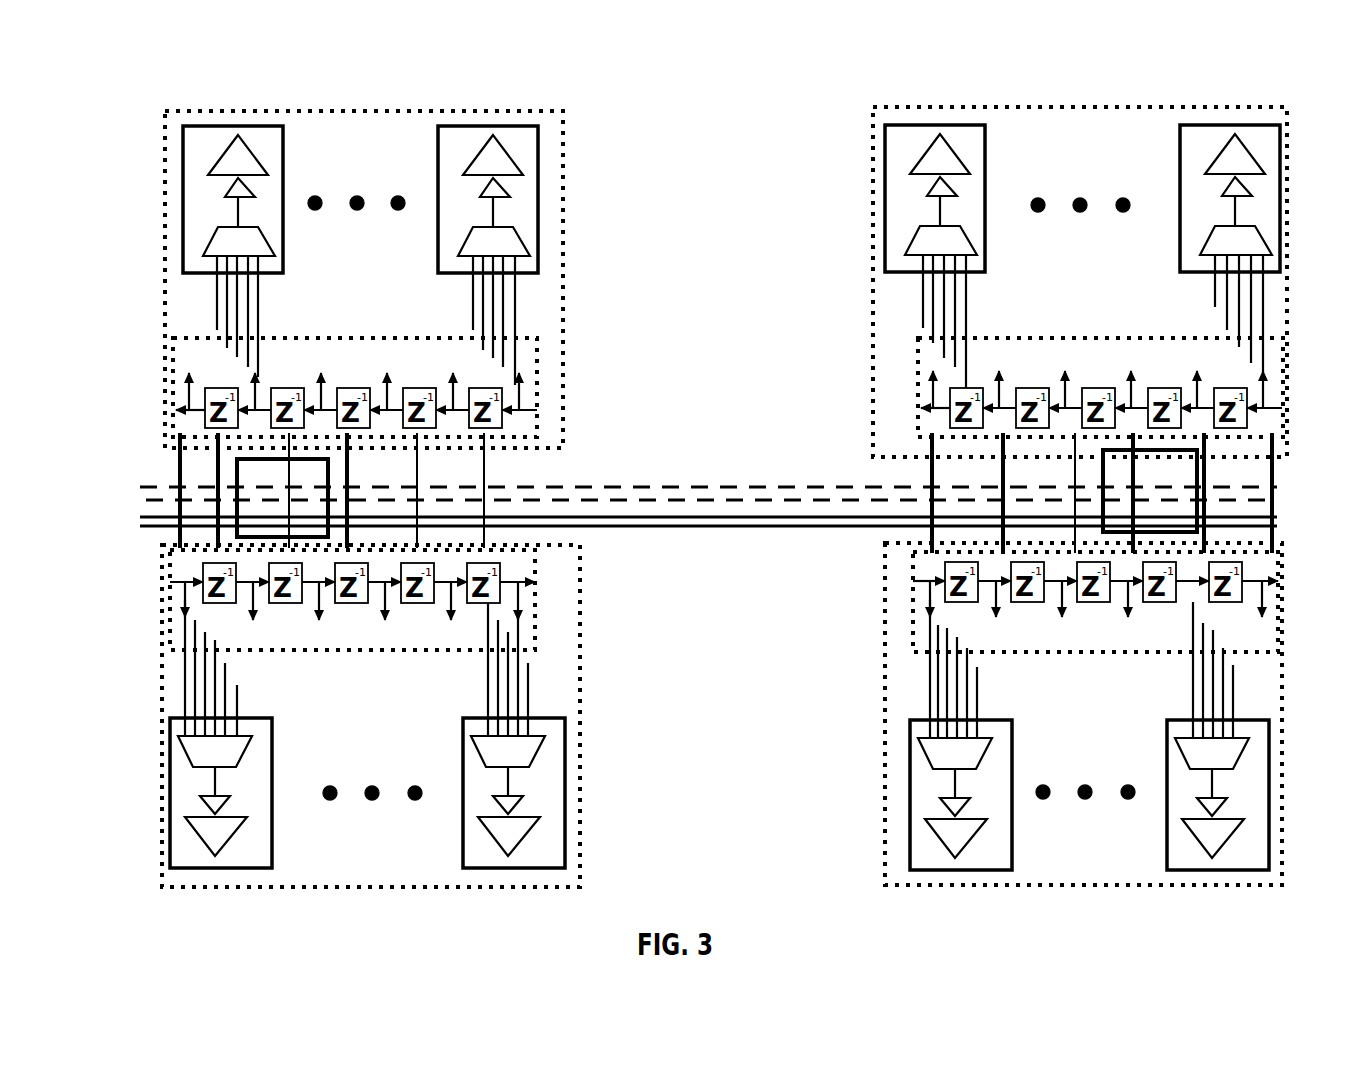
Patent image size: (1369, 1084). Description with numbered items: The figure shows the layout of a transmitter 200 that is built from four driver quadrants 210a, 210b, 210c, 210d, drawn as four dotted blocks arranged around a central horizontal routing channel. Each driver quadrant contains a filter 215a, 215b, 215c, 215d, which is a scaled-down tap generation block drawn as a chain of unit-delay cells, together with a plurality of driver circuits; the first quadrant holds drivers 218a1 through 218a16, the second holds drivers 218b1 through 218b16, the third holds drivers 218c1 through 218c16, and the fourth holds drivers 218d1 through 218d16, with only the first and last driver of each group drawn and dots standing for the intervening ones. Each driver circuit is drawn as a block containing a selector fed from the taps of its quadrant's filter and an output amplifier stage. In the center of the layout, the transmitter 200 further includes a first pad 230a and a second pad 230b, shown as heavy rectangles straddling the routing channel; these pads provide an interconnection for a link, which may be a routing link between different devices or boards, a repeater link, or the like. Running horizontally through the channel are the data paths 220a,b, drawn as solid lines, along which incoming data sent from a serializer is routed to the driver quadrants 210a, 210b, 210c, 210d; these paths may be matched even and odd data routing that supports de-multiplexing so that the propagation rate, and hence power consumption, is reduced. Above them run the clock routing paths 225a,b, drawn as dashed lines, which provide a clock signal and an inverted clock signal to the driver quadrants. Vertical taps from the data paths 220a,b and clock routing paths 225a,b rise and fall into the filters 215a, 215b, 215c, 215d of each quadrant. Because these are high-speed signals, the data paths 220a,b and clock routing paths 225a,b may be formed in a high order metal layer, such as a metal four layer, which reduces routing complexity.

The transmitter 200 is at (217, 76).
The driver quadrant 210a is at (440, 716).
The driver quadrant 210b is at (420, 251).
The driver quadrant 210c is at (1062, 256).
The driver quadrant 210d is at (1072, 714).
The filter 215a is at (421, 600).
The filter 215b is at (412, 387).
The filter 215c is at (1141, 387).
The filter 215d is at (1136, 602).
The driver circuit 218a1 is at (278, 734).
The driver circuit 218a16 is at (590, 735).
The driver circuit 218b1 is at (551, 255).
The driver circuit 218b16 is at (284, 216).
The driver circuit 218c1 is at (1269, 214).
The driver circuit 218c16 is at (974, 222).
The driver circuit 218d1 is at (1022, 735).
The driver circuit 218d16 is at (1157, 736).
The data paths 220a,b is at (708, 545).
The clock routing paths 225a,b is at (708, 470).
The first pad 230a is at (186, 480).
The second pad 230b is at (1231, 481).